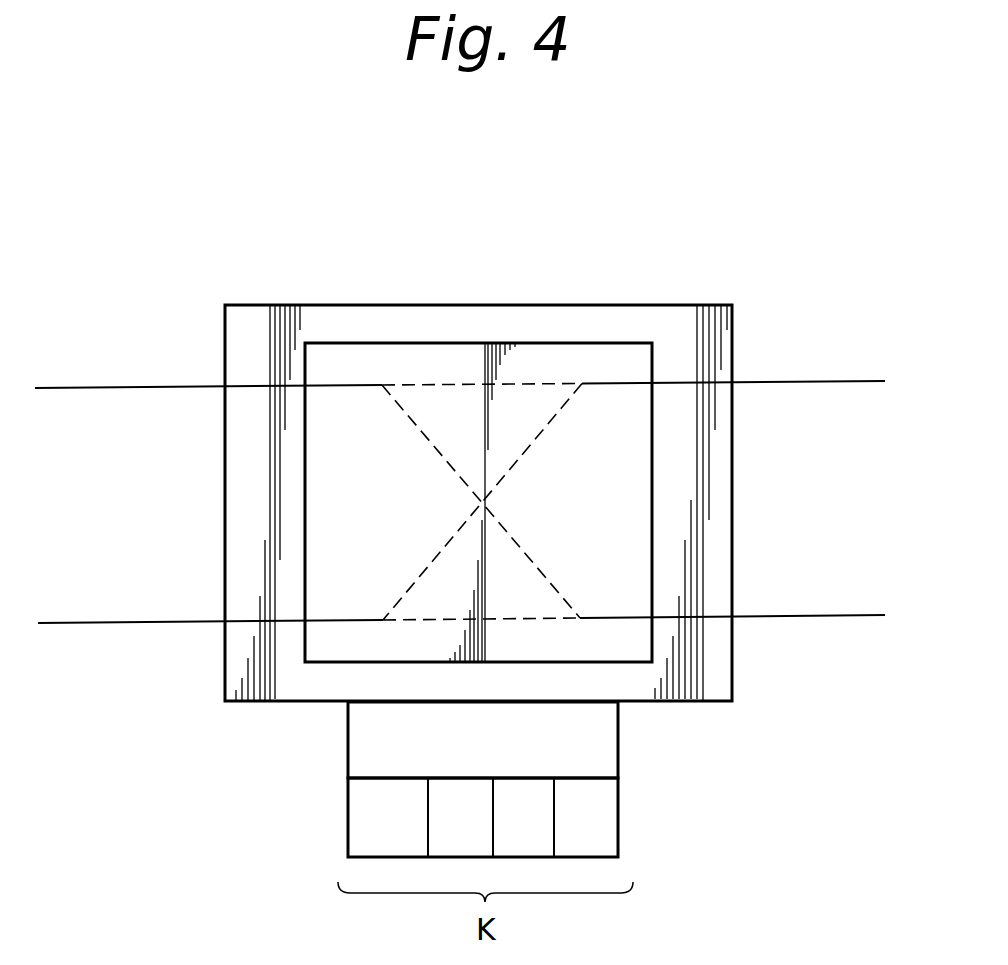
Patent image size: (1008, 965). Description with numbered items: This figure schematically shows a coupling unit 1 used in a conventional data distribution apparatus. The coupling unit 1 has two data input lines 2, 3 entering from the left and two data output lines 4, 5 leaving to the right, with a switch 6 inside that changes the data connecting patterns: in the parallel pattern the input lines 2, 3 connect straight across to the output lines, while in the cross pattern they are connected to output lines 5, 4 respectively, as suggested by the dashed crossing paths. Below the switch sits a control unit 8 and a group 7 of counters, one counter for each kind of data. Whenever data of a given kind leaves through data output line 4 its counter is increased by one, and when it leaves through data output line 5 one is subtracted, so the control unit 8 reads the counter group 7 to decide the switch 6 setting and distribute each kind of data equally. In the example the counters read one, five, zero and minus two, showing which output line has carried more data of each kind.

The coupling unit 1 is at (499, 302).
The data input line 2 is at (89, 387).
The data input line 3 is at (86, 622).
The data output line 4 is at (838, 382).
The data output line 5 is at (842, 616).
The switch 6 is at (638, 340).
The group of counters 7 is at (619, 828).
The control unit 8 is at (619, 742).